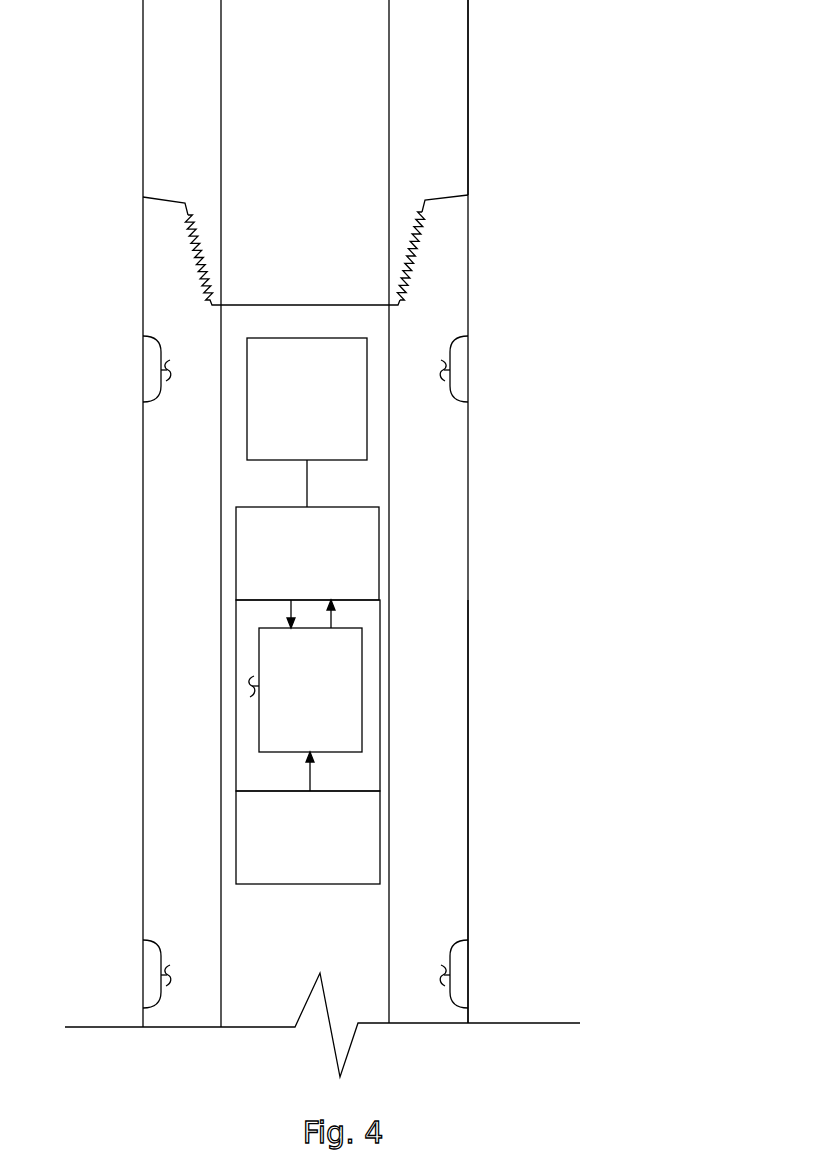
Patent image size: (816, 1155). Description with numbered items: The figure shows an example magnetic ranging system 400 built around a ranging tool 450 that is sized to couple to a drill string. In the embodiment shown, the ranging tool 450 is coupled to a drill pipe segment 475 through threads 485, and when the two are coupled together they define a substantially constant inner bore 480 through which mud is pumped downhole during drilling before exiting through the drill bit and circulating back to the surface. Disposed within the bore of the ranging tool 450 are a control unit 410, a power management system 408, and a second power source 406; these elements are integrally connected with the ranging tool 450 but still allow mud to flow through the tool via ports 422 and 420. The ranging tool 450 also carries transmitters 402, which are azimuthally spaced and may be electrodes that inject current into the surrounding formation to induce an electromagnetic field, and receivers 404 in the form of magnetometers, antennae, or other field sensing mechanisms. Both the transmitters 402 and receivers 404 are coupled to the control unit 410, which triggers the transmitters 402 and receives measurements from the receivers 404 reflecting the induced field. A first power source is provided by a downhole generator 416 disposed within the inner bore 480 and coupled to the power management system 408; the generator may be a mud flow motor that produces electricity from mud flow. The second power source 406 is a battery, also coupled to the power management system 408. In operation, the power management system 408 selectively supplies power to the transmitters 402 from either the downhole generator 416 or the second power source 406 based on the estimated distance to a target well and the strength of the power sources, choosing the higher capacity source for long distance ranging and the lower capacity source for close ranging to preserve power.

The magnetic ranging system 400 is at (562, 218).
The transmitters 402 is at (150, 370).
The receivers 404 is at (148, 980).
The second power source 406 is at (308, 837).
The power management system 408 is at (305, 690).
The control unit 410 is at (307, 553).
The downhole generator 416 is at (307, 399).
The port 420 is at (393, 659).
The port 422 is at (236, 643).
The ranging tool 450 is at (470, 718).
The drill pipe segment 475 is at (468, 73).
The inner bore 480 is at (221, 98).
The threads 485 is at (196, 247).